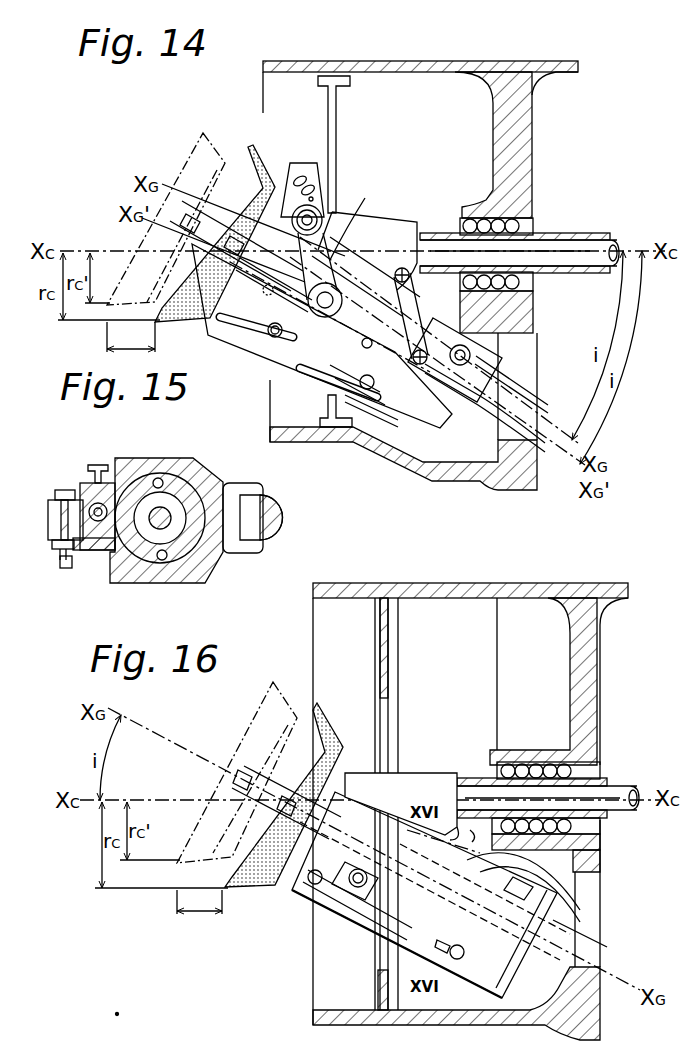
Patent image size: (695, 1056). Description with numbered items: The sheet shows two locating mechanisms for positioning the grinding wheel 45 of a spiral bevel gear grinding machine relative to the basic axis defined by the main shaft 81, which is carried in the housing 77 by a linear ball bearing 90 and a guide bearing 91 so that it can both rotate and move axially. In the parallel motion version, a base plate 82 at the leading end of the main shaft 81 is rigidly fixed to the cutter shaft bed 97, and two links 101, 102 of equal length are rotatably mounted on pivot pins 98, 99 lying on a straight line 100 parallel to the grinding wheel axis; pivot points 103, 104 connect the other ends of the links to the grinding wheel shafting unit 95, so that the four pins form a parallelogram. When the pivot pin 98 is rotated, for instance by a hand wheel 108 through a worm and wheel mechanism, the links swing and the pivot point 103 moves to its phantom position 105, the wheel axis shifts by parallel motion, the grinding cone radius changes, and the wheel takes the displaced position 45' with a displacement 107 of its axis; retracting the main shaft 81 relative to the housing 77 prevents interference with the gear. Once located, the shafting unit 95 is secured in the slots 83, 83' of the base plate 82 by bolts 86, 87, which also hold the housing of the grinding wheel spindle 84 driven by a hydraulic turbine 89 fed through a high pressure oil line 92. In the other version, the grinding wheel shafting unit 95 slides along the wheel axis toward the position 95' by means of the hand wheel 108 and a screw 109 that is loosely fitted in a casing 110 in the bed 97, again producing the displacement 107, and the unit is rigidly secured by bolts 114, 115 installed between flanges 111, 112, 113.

In FIG. 14, the grinding wheel 45 is at (220, 216).
In FIG. 16, the grinding wheel 45 is at (289, 776).
In FIG. 14, the grinding wheel position 45' is at (170, 199).
In FIG. 16, the grinding wheel position 45' is at (238, 751).
In FIG. 14, the housing 77 is at (532, 92).
In FIG. 16, the housing 77 is at (600, 615).
In FIG. 14, the main shaft 81 is at (590, 240).
In FIG. 15, the main shaft 81 is at (280, 496).
In FIG. 16, the main shaft 81 is at (622, 820).
In FIG. 14, the base plate 82 is at (262, 372).
In FIG. 14, the slot 83 is at (239, 349).
In FIG. 14, the slot 83' is at (327, 394).
In FIG. 15, the grinding wheel spindle 84 is at (170, 528).
In FIG. 16, the grinding wheel spindle 84 is at (312, 885).
In FIG. 14, the bolt 86 is at (270, 340).
In FIG. 14, the bolt 87 is at (352, 443).
In FIG. 16, the hydraulic turbine 89 is at (618, 870).
In FIG. 14, the linear ball bearing 90 is at (528, 228).
In FIG. 16, the linear ball bearing 90 is at (580, 773).
In FIG. 14, the guide bearing 91 is at (330, 74).
In FIG. 16, the guide bearing 91 is at (398, 600).
In FIG. 16, the high pressure oil line 92 is at (605, 945).
In FIG. 14, the grinding wheel shafting unit 95 is at (345, 406).
In FIG. 16, the grinding wheel shafting unit 95 is at (431, 895).
In FIG. 16, the grinding wheel shafting unit position 95' is at (525, 942).
In FIG. 14, the cutter shaft bed 97 is at (385, 218).
In FIG. 15, the cutter shaft bed 97 is at (243, 554).
In FIG. 16, the cutter shaft bed 97 is at (435, 772).
In FIG. 14, the pivot pin 98 is at (322, 212).
In FIG. 14, the pivot pin 99 is at (407, 268).
In FIG. 14, the straight line 100 is at (345, 258).
In FIG. 14, the link 101 is at (368, 198).
In FIG. 14, the link 102 is at (448, 336).
In FIG. 14, the pivot point 103 is at (268, 208).
In FIG. 16, the pivot point 103 is at (286, 802).
In FIG. 14, the pivot point 104 is at (436, 385).
In FIG. 14, the phantom position 105 is at (240, 345).
In FIG. 14, the displacement 107 is at (131, 337).
In FIG. 16, the displacement 107 is at (199, 901).
In FIG. 14, the hand wheel 108 is at (308, 178).
In FIG. 15, the hand wheel 108 is at (95, 490).
In FIG. 16, the hand wheel 108 is at (340, 895).
In FIG. 15, the screw 109 is at (100, 550).
In FIG. 16, the screw 109 is at (362, 930).
In FIG. 15, the casing 110 is at (132, 582).
In FIG. 15, the flange 111 is at (54, 548).
In FIG. 15, the flange 112 is at (52, 500).
In FIG. 15, the flange 113 is at (66, 568).
In FIG. 16, the bolt 114 is at (452, 962).
In FIG. 15, the bolt 115 is at (92, 468).
In FIG. 16, the bolt 115 is at (350, 888).